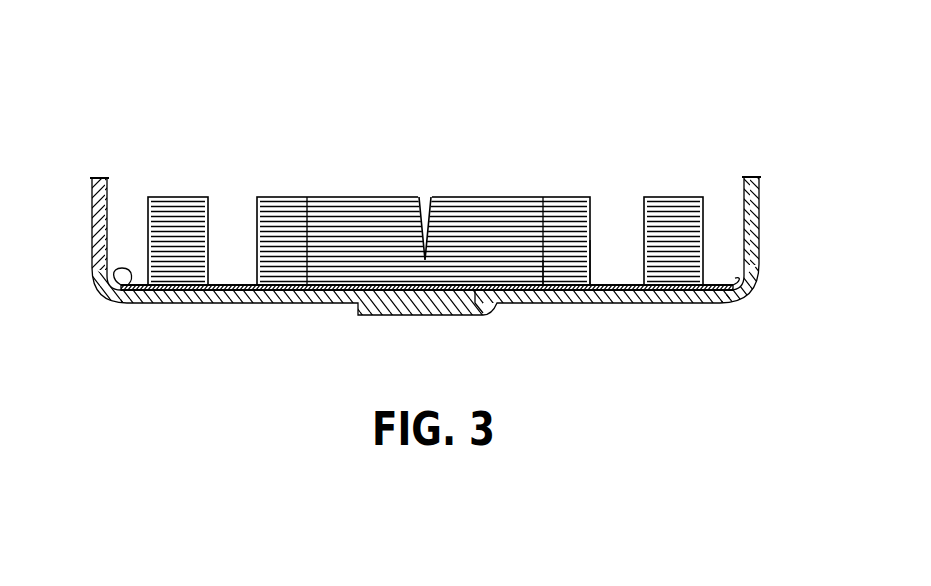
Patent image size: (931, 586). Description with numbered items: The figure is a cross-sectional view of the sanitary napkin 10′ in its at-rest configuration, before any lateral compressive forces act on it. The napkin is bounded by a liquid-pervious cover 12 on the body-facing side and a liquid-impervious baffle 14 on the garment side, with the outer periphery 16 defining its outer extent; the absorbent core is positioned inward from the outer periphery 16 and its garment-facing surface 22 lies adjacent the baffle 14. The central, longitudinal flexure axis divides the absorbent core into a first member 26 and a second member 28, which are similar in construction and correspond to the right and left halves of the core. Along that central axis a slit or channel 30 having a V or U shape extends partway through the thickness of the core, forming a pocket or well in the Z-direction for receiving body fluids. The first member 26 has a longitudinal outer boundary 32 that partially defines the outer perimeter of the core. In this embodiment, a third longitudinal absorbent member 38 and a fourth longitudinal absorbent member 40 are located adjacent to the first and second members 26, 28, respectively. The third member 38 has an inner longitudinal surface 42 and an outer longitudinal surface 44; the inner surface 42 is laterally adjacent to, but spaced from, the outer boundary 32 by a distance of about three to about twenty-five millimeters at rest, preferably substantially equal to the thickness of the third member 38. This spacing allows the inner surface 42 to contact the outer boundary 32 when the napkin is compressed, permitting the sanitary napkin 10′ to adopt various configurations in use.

The sanitary napkin 10′ is at (318, 80).
The liquid-pervious cover 12 is at (92, 192).
The liquid-impervious baffle 14 is at (119, 272).
The outer periphery 16 is at (759, 224).
The garment-facing surface 22 is at (277, 290).
The first member 26 is at (510, 196).
The second member 28 is at (340, 196).
The slit or channel 30 is at (428, 196).
The longitudinal outer boundary 32 is at (594, 252).
The third longitudinal absorbent member 38 is at (677, 266).
The fourth longitudinal absorbent member 40 is at (186, 196).
The inner longitudinal surface 42 is at (643, 247).
The outer longitudinal surface 44 is at (703, 247).